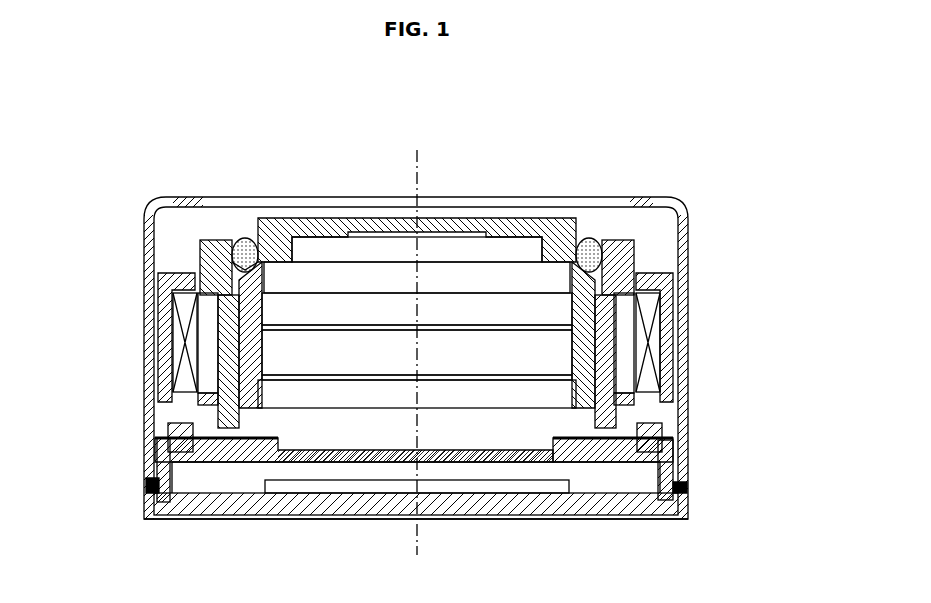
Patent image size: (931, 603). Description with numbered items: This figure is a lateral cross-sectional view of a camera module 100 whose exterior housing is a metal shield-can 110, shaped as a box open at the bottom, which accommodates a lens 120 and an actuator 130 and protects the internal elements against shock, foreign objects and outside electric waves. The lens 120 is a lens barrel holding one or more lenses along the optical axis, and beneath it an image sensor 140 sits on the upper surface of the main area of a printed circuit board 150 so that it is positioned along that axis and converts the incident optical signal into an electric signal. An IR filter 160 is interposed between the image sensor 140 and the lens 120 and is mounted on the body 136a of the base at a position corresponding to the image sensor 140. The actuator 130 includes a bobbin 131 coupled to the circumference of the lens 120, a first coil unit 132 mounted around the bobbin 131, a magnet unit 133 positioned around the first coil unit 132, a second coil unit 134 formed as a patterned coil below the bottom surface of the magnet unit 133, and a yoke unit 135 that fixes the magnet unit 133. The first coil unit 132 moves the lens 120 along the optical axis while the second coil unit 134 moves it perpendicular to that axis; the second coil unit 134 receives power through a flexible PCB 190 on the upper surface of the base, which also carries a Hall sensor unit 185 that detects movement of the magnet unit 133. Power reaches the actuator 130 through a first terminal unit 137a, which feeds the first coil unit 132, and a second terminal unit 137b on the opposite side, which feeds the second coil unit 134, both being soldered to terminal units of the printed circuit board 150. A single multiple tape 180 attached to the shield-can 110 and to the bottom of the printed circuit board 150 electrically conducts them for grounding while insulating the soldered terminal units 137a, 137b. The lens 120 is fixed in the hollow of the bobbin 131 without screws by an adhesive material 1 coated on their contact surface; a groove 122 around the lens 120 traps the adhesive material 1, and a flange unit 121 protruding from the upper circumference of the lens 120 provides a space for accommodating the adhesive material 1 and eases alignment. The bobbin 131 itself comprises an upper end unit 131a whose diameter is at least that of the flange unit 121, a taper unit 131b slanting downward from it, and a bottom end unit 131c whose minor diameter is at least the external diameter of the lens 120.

The camera module 100 is at (152, 104).
The adhesive material 1 is at (590, 238).
The shield-can 110 is at (667, 198).
The lens 120 is at (528, 216).
The flange unit 121 is at (232, 263).
The groove 122 is at (241, 240).
The actuator 130 is at (498, 345).
The bobbin 131 is at (386, 312).
The upper end unit 131a is at (208, 262).
The taper unit 131b is at (230, 296).
The bottom end unit 131c is at (222, 338).
The first coil unit 132 is at (622, 307).
The magnet unit 133 is at (647, 326).
The second coil unit 134 is at (660, 419).
The yoke unit 135 is at (667, 353).
The body of base 136a is at (605, 455).
The first terminal unit 137a is at (687, 482).
The second terminal unit 137b is at (153, 482).
The image sensor 140 is at (527, 482).
The printed circuit board 150 is at (598, 503).
The IR filter 160 is at (350, 462).
The single multiple tape 180 is at (153, 523).
The Hall sensor unit 185 is at (188, 452).
The flexible PCB 190 is at (158, 455).